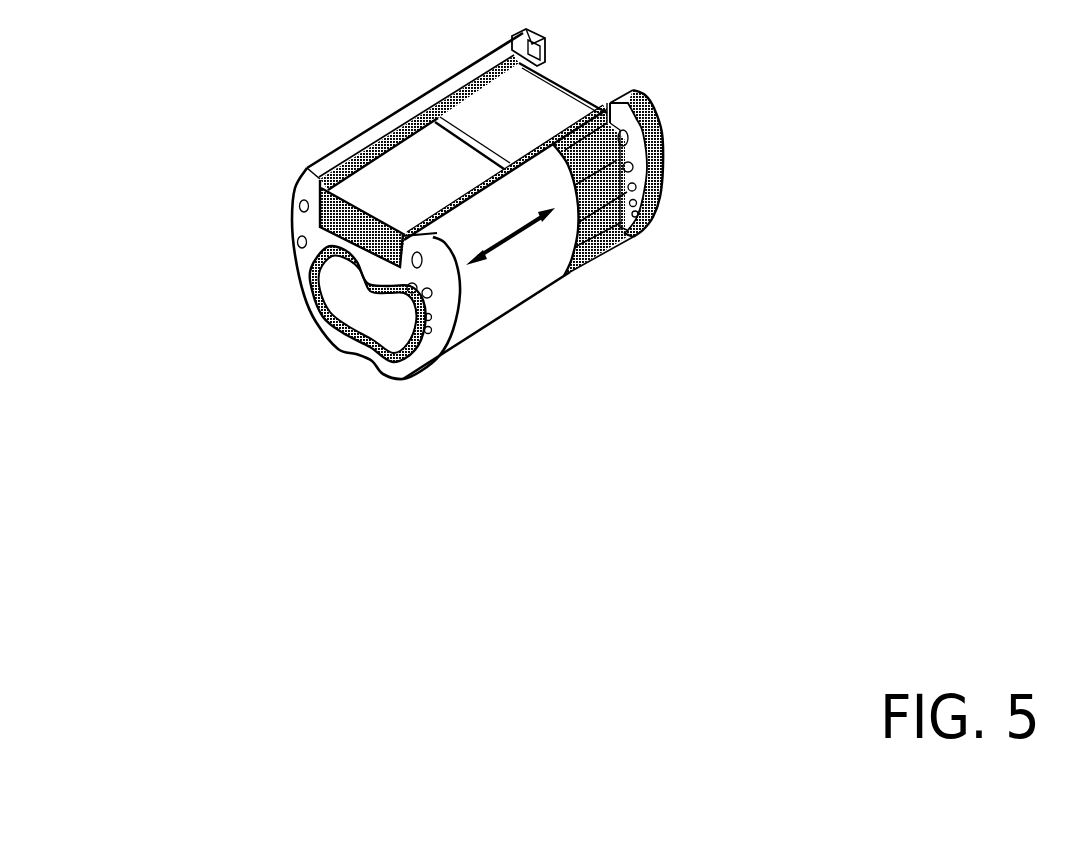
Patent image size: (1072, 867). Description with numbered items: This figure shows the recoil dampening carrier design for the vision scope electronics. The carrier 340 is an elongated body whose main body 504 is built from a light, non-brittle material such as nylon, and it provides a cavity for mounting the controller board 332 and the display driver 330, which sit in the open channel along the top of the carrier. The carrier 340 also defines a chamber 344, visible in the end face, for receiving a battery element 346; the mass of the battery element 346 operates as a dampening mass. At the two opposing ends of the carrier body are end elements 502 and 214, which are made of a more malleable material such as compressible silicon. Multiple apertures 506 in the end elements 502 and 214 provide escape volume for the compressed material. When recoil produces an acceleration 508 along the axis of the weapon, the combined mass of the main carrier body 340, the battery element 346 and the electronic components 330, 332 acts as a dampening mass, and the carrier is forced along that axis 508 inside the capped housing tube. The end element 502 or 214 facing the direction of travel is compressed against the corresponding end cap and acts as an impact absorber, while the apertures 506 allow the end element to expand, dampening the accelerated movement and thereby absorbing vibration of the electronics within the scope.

The end element 214 is at (648, 130).
The display driver 330 is at (530, 102).
The controller board 332 is at (392, 185).
The carrier 340 is at (327, 157).
The chamber 344 is at (335, 317).
The battery element 346 is at (403, 321).
The end element 502 is at (313, 233).
The main body 504 is at (495, 293).
The apertures 506 is at (417, 265).
The axis of acceleration 508 is at (512, 240).